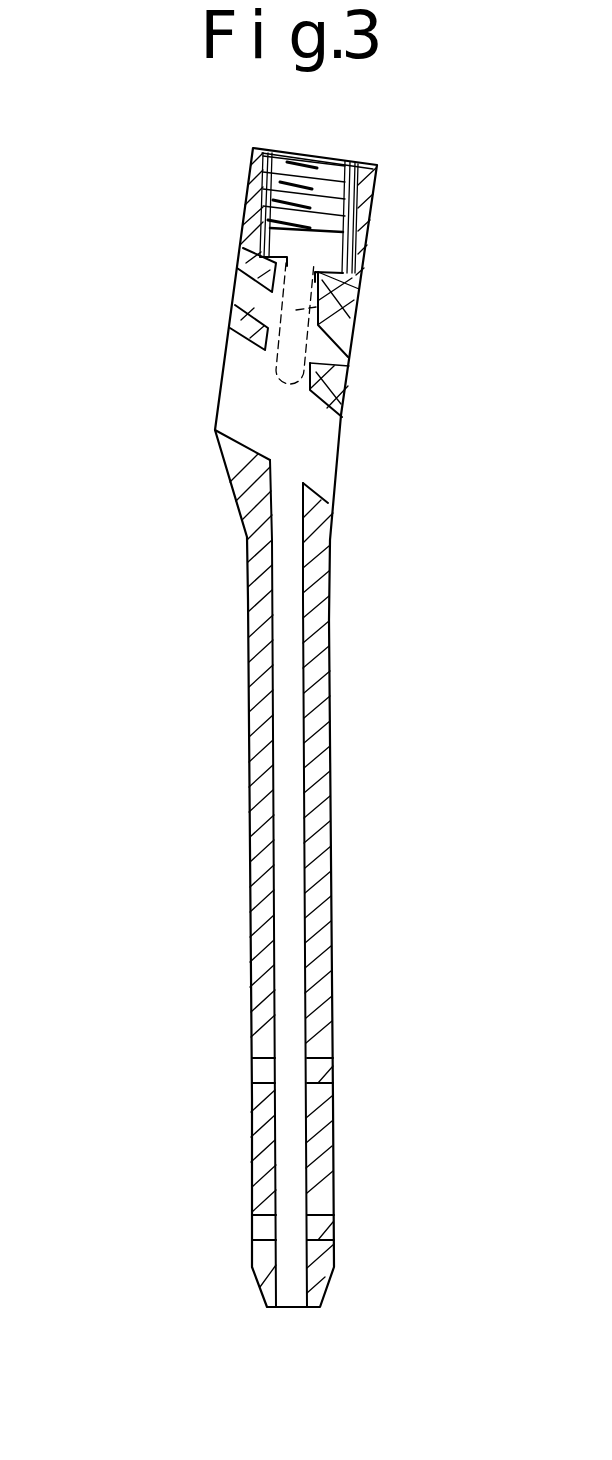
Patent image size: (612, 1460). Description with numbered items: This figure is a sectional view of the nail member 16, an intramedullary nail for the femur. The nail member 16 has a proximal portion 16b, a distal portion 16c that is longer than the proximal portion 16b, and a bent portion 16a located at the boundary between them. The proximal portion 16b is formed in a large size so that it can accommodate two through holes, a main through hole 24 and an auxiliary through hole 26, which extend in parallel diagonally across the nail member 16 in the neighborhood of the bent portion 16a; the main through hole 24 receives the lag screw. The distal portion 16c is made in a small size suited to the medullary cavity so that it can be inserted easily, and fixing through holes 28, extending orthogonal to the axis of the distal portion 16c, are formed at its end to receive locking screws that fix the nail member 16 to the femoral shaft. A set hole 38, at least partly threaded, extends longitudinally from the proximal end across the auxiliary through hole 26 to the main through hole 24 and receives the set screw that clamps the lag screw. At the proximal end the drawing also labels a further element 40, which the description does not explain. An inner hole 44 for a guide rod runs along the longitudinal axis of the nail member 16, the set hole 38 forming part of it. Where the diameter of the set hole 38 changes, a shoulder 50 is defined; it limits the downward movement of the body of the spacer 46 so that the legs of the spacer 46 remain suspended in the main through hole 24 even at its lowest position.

The nail member 16 is at (332, 716).
The bent portion 16a is at (235, 495).
The proximal portion 16b is at (244, 216).
The distal portion 16c is at (249, 815).
The main through hole 24 is at (303, 485).
The auxiliary through hole 26 is at (327, 370).
The fixing through holes 28 is at (333, 1217).
The set hole 38 is at (342, 279).
The cap 40 is at (338, 177).
The inner hole for the guide rod 44 is at (297, 820).
The spacer 46 is at (316, 307).
The shoulder 50 is at (256, 252).